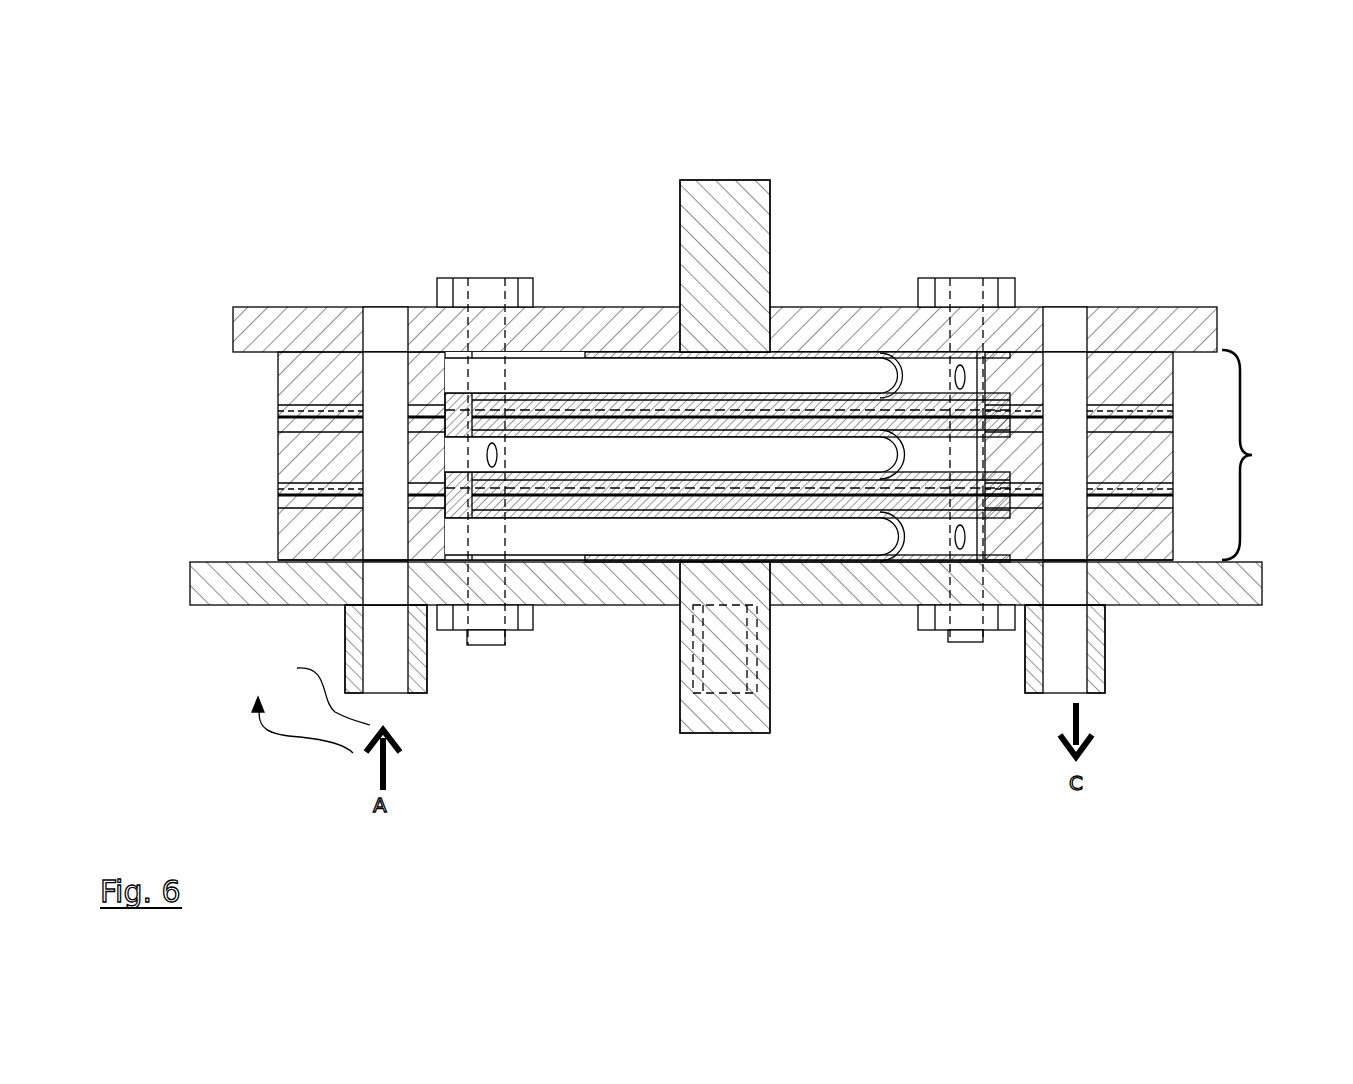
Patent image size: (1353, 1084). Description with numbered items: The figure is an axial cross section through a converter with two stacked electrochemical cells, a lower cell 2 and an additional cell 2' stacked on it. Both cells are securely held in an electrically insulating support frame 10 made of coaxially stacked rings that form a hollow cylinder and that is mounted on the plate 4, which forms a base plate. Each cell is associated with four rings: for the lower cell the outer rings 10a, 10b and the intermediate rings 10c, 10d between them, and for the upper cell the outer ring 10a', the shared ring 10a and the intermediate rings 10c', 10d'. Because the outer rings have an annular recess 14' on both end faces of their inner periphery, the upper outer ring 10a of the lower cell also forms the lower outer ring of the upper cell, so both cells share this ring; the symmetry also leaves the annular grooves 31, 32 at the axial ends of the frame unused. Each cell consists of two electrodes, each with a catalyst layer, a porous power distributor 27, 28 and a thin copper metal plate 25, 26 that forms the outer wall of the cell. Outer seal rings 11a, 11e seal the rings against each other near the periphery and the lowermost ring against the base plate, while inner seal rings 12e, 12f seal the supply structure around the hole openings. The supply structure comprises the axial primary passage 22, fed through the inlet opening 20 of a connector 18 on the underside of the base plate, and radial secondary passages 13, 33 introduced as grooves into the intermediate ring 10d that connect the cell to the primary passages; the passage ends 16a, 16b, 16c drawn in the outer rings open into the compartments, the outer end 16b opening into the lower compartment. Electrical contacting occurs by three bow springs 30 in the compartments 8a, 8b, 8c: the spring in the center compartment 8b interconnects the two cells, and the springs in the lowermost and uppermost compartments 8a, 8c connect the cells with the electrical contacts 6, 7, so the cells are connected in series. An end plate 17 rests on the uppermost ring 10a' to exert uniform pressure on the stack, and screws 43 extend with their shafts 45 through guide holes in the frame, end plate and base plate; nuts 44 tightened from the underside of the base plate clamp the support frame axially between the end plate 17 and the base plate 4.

The cell 2 is at (726, 521).
The additional cell 2' is at (905, 292).
The plate 4 is at (226, 582).
The electrical contact 6 is at (658, 202).
The electrical contact 7 is at (727, 713).
The compartment 8a is at (722, 515).
The compartment 8b is at (570, 447).
The compartment 8c is at (558, 377).
The support frame 10 is at (788, 455).
The outer ring 10a is at (649, 451).
The outer ring 10a' is at (660, 365).
The outer ring 10b is at (278, 528).
The intermediate ring 10c is at (649, 473).
The intermediate ring 10c' is at (660, 389).
The intermediate ring 10d is at (647, 500).
The intermediate ring 10d' is at (660, 414).
The outer seal ring 11a is at (318, 560).
The outer seal ring 11e is at (310, 415).
The inner seal ring 12e is at (343, 480).
The inner seal ring 12f is at (415, 500).
The secondary passage 13 is at (425, 500).
The annular recess 14' is at (455, 290).
The hole 16a is at (495, 443).
The outer end 16b is at (950, 545).
The hole 16c is at (960, 365).
The end plate 17 is at (1143, 320).
The connector 18 is at (293, 729).
The inlet opening 20 is at (317, 726).
The primary passage 22 is at (244, 697).
The metal plate 25 is at (683, 400).
The metal plate 26 is at (802, 430).
The power distributor 27 is at (718, 420).
The power distributor 28 is at (768, 427).
The bow spring 30 is at (826, 515).
The annular groove 31 is at (1012, 525).
The annular groove 32 is at (1010, 330).
The secondary passage 33 is at (1040, 500).
The screw 43 is at (480, 278).
The nut 44 is at (533, 608).
The shaft 45 is at (505, 645).